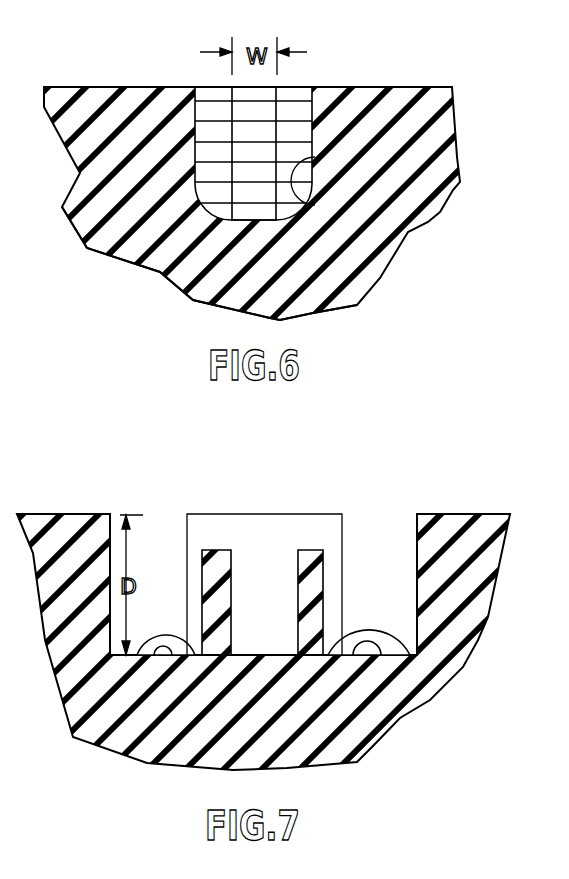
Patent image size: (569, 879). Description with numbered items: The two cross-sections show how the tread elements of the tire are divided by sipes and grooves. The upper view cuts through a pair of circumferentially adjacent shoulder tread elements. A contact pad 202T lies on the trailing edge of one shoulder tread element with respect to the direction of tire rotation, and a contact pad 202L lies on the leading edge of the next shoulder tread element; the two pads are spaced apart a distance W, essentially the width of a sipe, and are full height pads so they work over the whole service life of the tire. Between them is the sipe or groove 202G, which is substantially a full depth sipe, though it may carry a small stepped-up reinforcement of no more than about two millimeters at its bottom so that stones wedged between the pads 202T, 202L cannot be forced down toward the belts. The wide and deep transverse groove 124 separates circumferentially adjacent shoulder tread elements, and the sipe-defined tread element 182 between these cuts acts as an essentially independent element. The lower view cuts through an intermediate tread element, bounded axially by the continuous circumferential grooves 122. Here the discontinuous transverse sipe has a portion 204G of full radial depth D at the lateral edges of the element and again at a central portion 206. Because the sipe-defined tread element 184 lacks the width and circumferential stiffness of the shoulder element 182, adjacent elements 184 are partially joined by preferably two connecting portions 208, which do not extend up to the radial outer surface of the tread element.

In FIG. 6, the sipe defined tread element 182 is at (150, 87).
In FIG. 7, the sipe defined tread element 182 is at (77, 514).
In FIG. 6, the sipe or groove 202G is at (255, 122).
In FIG. 6, the contact pad 202T is at (290, 137).
In FIG. 6, the contact pad 202L is at (142, 245).
In FIG. 6, the transverse groove 124 is at (312, 195).
In FIG. 7, the sipe defined tread element 184 is at (327, 514).
In FIG. 7, the connecting portions 208 is at (317, 558).
In FIG. 7, the central portion 206 is at (257, 654).
In FIG. 7, the full depth portion of sipe 204G is at (145, 650).
In FIG. 7, the circumferential groove 122 is at (166, 650).